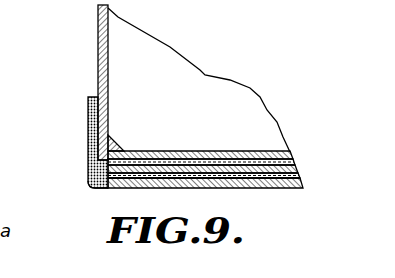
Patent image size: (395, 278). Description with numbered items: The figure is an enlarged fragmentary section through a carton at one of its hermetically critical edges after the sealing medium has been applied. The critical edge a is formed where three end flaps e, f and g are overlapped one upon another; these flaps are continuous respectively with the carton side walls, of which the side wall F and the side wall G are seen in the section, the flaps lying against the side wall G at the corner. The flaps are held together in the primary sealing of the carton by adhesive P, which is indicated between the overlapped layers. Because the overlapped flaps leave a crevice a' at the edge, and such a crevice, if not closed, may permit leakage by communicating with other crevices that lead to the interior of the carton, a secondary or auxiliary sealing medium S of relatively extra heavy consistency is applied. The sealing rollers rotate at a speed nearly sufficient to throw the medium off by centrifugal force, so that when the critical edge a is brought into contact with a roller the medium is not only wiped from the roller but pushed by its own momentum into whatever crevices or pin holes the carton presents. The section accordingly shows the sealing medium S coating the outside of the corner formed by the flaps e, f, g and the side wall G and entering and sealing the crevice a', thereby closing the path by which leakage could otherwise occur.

The side wall G is at (97, 52).
The side wall F is at (192, 78).
The secondary sealing medium S is at (88, 153).
The critical edge a is at (76, 176).
The crevice a' is at (129, 133).
The end flap g is at (192, 150).
The adhesive P is at (297, 157).
The end flap f is at (168, 188).
The end flap e is at (213, 178).